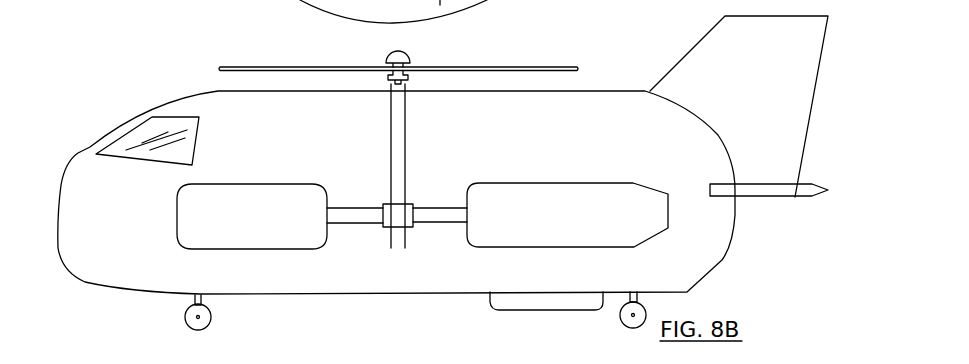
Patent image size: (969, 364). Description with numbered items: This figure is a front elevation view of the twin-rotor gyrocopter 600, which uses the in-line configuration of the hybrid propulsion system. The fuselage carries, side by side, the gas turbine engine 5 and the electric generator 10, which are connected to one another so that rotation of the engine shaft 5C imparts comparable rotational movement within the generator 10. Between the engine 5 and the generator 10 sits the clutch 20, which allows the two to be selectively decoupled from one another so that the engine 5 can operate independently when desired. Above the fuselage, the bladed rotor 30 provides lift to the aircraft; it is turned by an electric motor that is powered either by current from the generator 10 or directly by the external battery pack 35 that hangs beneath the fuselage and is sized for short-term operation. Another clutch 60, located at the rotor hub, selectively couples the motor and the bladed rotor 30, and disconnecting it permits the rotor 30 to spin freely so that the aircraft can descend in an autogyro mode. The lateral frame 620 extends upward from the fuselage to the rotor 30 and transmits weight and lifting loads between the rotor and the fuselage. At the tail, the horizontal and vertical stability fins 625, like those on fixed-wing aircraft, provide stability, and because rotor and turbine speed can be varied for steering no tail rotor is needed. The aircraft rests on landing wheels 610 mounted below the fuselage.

The gyrocopter 600 is at (600, 103).
The bladed rotor 30 is at (393, 54).
The clutch 60 is at (388, 78).
The lateral frame 620 is at (395, 127).
The clutch 20 is at (410, 223).
The engine shaft 5C is at (454, 213).
The electric generator 10 is at (195, 237).
The gas turbine engine 5 is at (603, 240).
The horizontal and vertical stability fins 625 is at (810, 186).
The external battery pack 35 is at (510, 305).
The landing wheels 610 is at (190, 327).